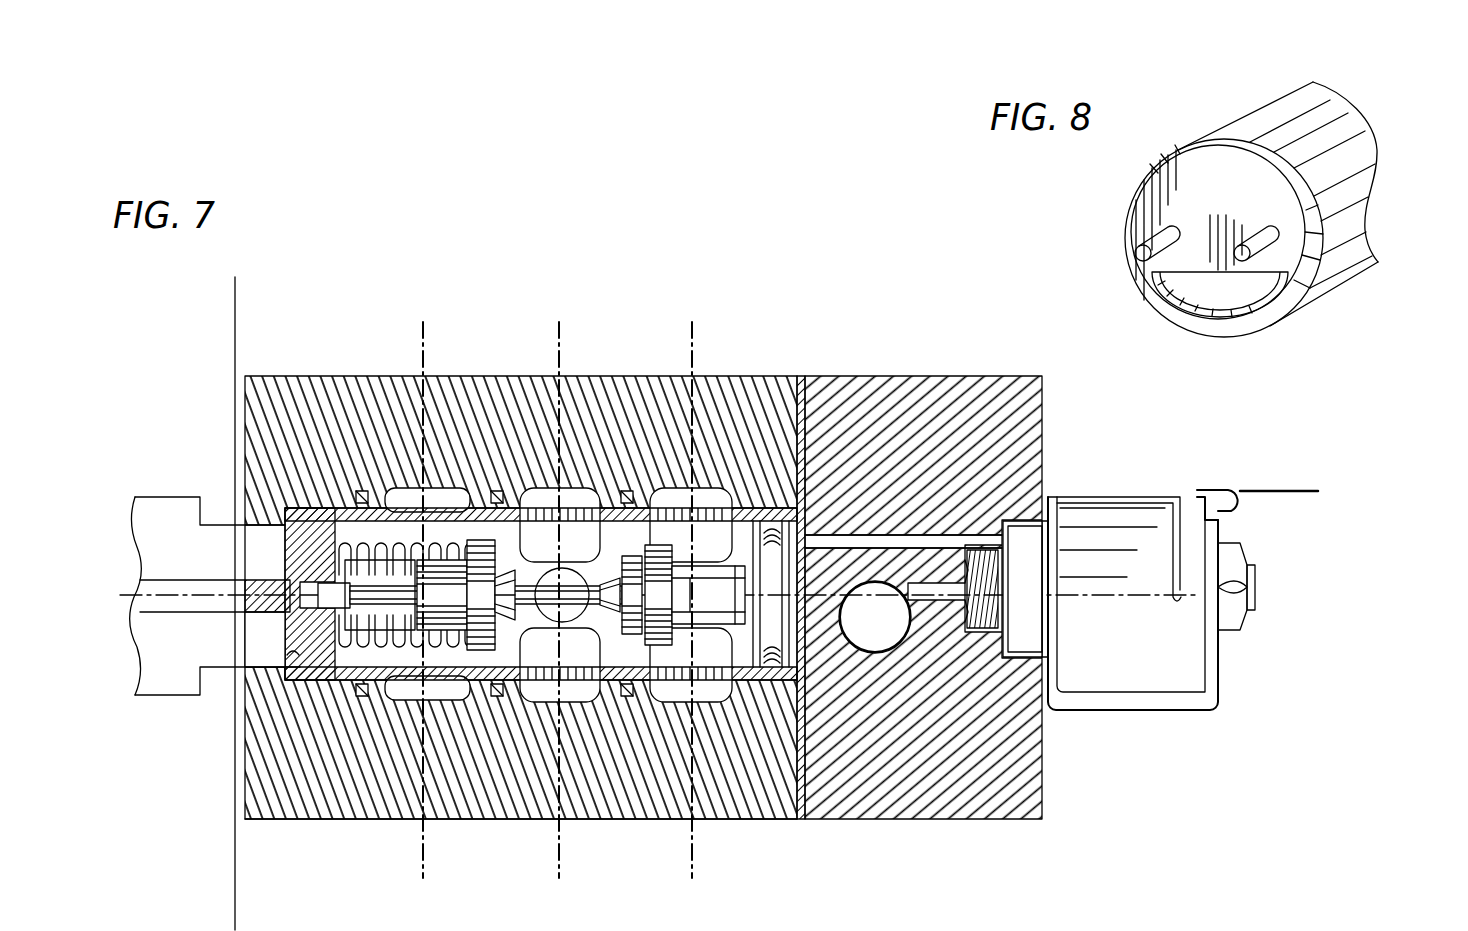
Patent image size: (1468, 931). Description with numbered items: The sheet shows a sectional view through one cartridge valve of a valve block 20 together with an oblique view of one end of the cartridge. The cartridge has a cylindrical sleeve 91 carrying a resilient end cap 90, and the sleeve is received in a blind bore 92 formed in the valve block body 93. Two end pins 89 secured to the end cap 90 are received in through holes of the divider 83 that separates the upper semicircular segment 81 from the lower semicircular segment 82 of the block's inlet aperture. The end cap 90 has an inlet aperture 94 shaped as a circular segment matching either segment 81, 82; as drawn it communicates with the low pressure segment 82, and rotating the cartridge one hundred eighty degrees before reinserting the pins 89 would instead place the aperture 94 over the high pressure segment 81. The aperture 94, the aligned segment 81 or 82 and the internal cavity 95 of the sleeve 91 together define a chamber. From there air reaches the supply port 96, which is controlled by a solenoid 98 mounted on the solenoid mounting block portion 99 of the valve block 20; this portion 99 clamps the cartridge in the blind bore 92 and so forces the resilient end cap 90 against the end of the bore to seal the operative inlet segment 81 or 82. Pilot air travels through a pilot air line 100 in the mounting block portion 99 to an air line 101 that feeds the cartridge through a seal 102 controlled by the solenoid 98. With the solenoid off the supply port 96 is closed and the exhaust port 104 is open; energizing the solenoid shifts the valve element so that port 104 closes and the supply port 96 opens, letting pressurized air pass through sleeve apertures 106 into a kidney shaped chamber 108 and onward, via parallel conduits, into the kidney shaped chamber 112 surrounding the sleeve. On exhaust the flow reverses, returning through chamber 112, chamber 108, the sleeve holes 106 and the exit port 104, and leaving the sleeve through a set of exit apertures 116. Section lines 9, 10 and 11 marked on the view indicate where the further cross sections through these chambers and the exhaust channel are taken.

In FIG. 7, the valve block 20 is at (925, 360).
In FIG. 7, the upper semicircular segment 81 is at (257, 540).
In FIG. 7, the lower semicircular segment 82 is at (262, 638).
In FIG. 7, the divider 83 is at (253, 640).
In FIG. 7, the end pins 89 is at (250, 595).
In FIG. 8, the end pins 89 is at (1258, 245).
In FIG. 7, the resilient end cap 90 is at (280, 500).
In FIG. 8, the resilient end cap 90 is at (1182, 204).
In FIG. 7, the cylindrical sleeve 91 is at (478, 520).
In FIG. 8, the cylindrical sleeve 91 is at (1340, 150).
In FIG. 7, the blind bore 92 is at (748, 515).
In FIG. 7, the valve block body 93 is at (735, 797).
In FIG. 7, the inlet aperture 94 is at (273, 658).
In FIG. 8, the inlet aperture 94 is at (1218, 295).
In FIG. 7, the internal cavity 95 is at (433, 533).
In FIG. 7, the supply port 96 is at (512, 622).
In FIG. 7, the solenoid 98 is at (1117, 507).
In FIG. 7, the solenoid mounting block portion 99 is at (977, 400).
In FIG. 7, the pilot air line 100 is at (888, 652).
In FIG. 7, the air line 101 is at (903, 540).
In FIG. 7, the seal 102 is at (963, 637).
In FIG. 7, the exhaust port 104 is at (580, 615).
In FIG. 7, the sleeve apertures 106 is at (583, 545).
In FIG. 7, the kidney shaped chamber 108 is at (558, 692).
In FIG. 7, the kidney shaped chamber 112 is at (415, 690).
In FIG. 7, the exit apertures 116 is at (662, 545).
In FIG. 7, the section line 9 is at (542, 333).
In FIG. 7, the section line 10 is at (407, 333).
In FIG. 7, the section line 11 is at (675, 333).